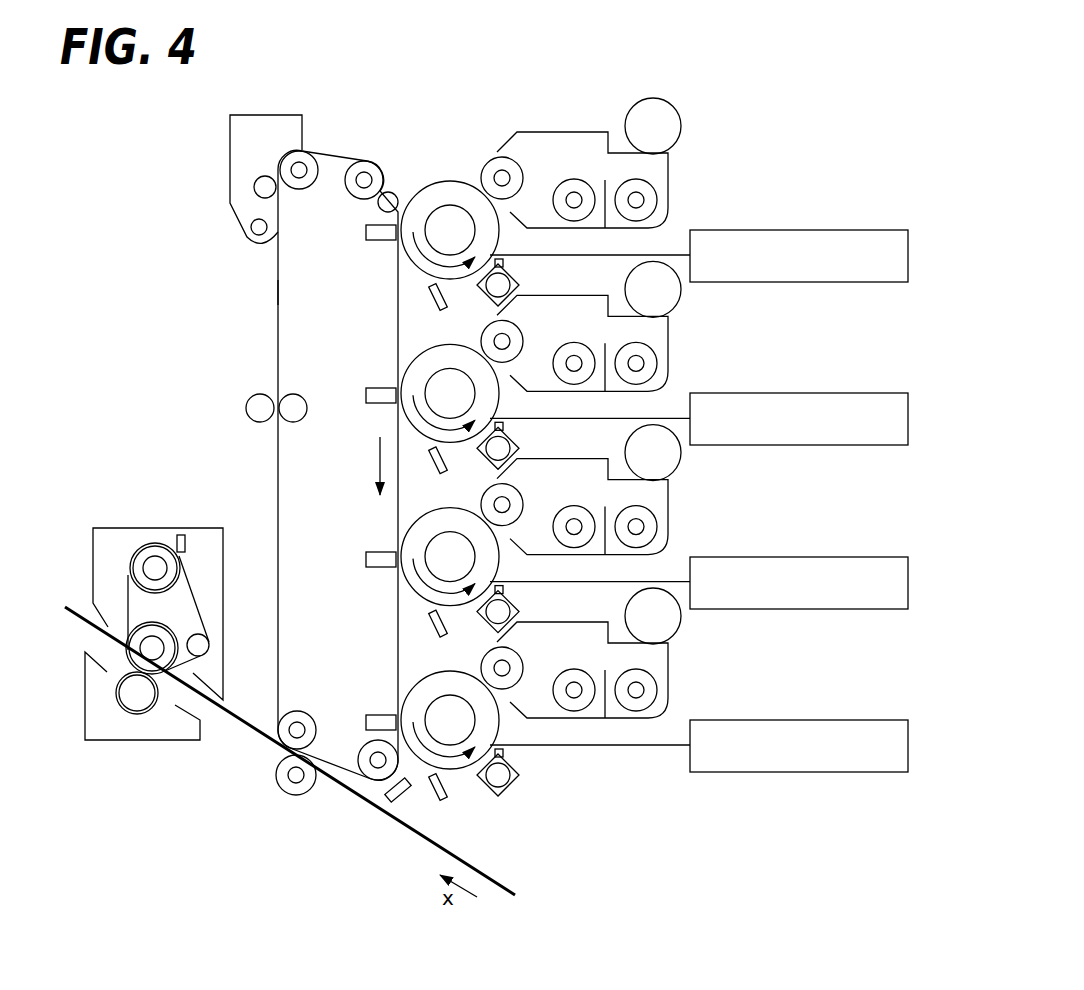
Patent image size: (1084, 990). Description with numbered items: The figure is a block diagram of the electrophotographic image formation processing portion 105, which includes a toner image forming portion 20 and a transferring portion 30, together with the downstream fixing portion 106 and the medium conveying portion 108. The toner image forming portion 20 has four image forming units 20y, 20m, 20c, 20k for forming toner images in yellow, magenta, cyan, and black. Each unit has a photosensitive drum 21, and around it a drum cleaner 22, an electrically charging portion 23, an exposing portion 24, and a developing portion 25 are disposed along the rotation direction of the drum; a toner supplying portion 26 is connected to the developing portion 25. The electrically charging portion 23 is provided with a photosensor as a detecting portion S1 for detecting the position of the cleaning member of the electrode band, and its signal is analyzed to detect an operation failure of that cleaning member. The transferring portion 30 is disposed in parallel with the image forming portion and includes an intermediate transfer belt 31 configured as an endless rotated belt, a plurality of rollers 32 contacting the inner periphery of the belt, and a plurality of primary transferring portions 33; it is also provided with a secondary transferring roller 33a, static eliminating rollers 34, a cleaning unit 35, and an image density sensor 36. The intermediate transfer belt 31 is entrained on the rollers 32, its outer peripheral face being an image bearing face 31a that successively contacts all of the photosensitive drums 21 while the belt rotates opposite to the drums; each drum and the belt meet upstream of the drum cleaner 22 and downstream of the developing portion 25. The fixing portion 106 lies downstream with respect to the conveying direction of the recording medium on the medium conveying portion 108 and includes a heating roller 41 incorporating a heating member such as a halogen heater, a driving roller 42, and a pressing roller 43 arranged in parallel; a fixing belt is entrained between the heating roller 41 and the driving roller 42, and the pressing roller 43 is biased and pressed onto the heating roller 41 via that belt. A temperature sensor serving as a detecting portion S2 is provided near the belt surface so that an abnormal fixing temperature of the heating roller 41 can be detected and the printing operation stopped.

The toner image forming portion 20 is at (790, 118).
The image forming unit 20y is at (880, 169).
The image forming unit 20m is at (874, 324).
The image forming unit 20c is at (870, 499).
The image forming unit 20k is at (675, 713).
The photosensitive drum 21 is at (433, 672).
The drum cleaner 22 is at (442, 792).
The electrically charging portion 23 is at (520, 788).
The exposing portion 24 is at (868, 230).
The developing portion 25 is at (668, 685).
The toner supplying portion 26 is at (678, 630).
The transferring portion 30 is at (399, 131).
The intermediate transfer belt 31 is at (278, 343).
The image bearing face 31a is at (276, 292).
The rollers 32 is at (306, 188).
The primary transferring portions 33 is at (377, 243).
The secondary transferring roller 33a is at (287, 793).
The static eliminating rollers 34 is at (247, 415).
The cleaning unit 35 is at (230, 137).
The image density sensor 36 is at (400, 802).
The heating roller 41 is at (170, 633).
The driving roller 42 is at (138, 545).
The pressing roller 43 is at (192, 587).
The image formation processing portion 105 is at (140, 124).
The fixing portion 106 is at (126, 443).
The medium conveying portion 108 is at (508, 882).
The detecting portion S1 is at (508, 753).
The detecting portion S2 is at (178, 533).